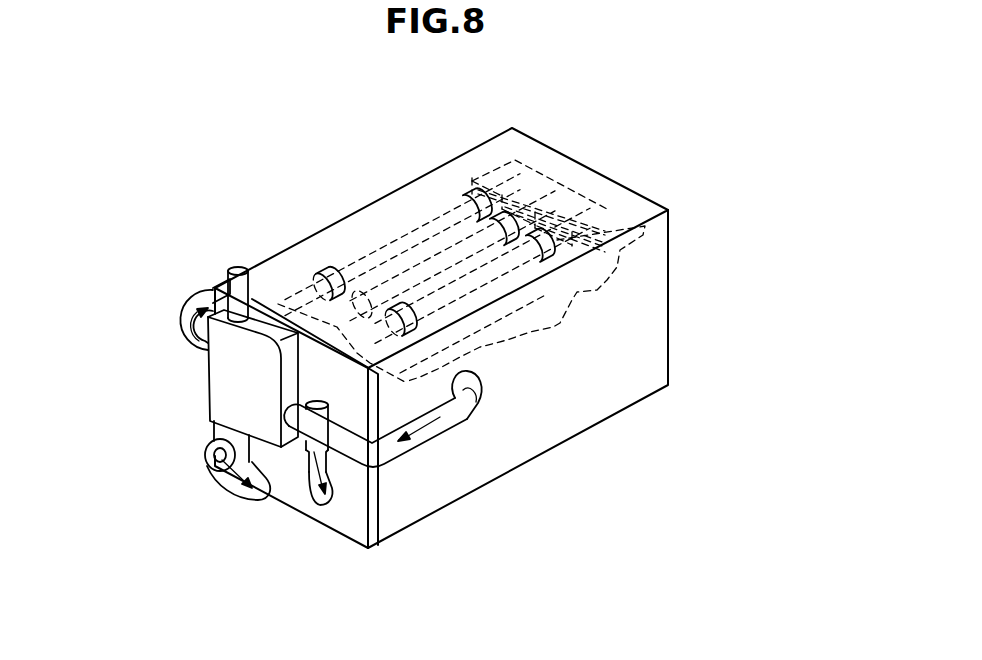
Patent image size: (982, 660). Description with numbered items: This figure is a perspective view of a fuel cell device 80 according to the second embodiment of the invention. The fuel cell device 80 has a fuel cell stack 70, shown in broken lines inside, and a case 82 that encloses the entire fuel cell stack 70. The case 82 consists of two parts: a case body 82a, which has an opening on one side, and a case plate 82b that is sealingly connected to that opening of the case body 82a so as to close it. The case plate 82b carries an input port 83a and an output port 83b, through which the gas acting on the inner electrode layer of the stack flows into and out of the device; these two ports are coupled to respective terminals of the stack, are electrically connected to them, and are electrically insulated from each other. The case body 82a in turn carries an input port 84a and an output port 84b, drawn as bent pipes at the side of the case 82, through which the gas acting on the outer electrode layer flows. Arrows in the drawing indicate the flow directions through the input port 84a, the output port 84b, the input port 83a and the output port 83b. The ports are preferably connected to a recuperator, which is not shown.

The fuel cell stack 70 is at (433, 200).
The fuel cell device 80 is at (645, 154).
The case 82 is at (553, 150).
The case body 82a is at (318, 247).
The case plate 82b is at (353, 510).
The input port 83a is at (315, 495).
The output port 83b is at (207, 443).
The input port 84a is at (203, 305).
The output port 84b is at (457, 417).